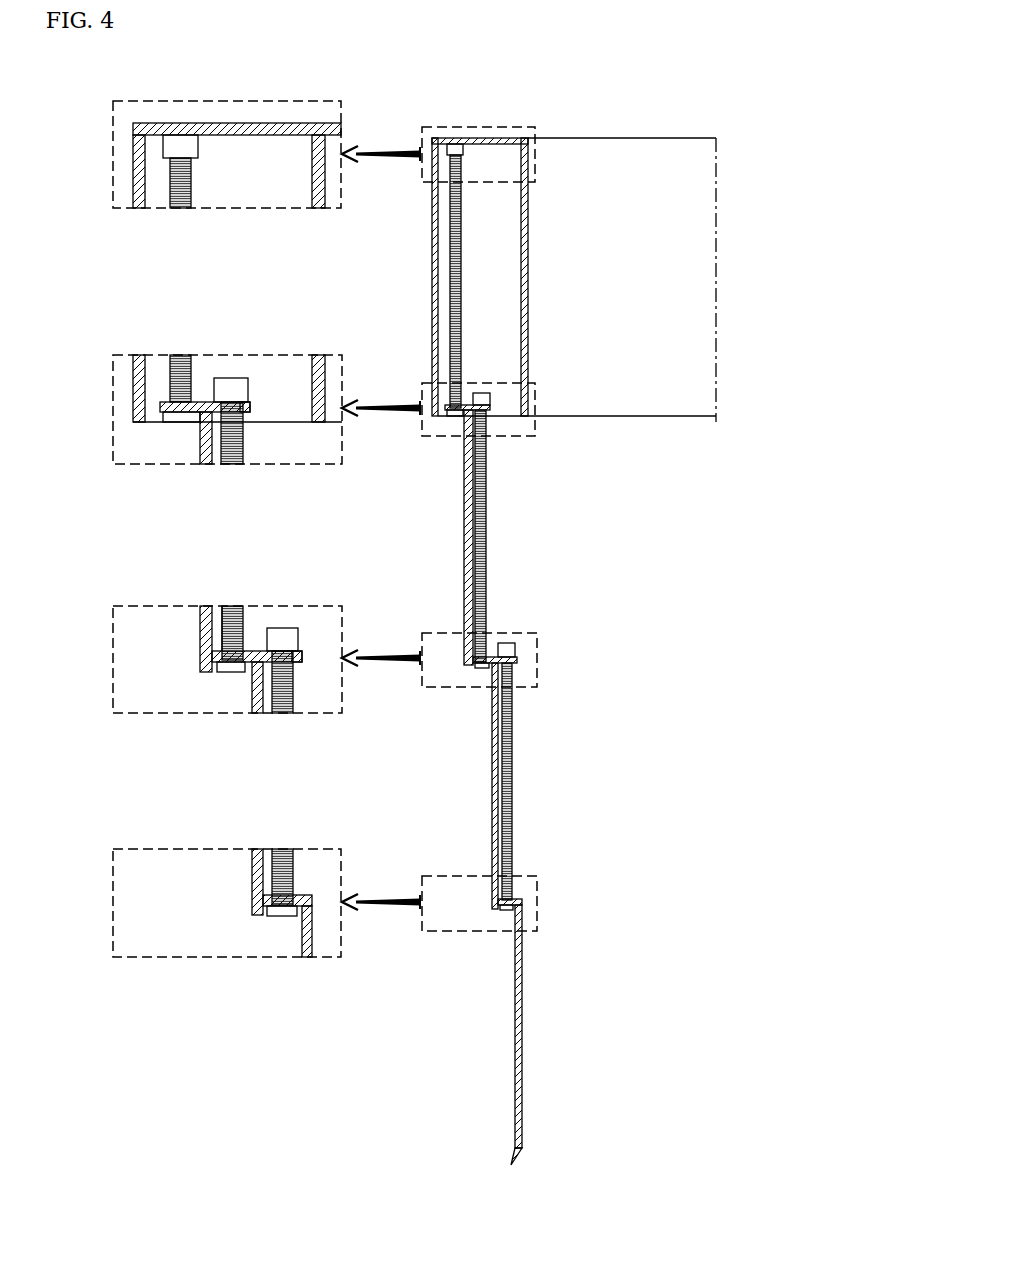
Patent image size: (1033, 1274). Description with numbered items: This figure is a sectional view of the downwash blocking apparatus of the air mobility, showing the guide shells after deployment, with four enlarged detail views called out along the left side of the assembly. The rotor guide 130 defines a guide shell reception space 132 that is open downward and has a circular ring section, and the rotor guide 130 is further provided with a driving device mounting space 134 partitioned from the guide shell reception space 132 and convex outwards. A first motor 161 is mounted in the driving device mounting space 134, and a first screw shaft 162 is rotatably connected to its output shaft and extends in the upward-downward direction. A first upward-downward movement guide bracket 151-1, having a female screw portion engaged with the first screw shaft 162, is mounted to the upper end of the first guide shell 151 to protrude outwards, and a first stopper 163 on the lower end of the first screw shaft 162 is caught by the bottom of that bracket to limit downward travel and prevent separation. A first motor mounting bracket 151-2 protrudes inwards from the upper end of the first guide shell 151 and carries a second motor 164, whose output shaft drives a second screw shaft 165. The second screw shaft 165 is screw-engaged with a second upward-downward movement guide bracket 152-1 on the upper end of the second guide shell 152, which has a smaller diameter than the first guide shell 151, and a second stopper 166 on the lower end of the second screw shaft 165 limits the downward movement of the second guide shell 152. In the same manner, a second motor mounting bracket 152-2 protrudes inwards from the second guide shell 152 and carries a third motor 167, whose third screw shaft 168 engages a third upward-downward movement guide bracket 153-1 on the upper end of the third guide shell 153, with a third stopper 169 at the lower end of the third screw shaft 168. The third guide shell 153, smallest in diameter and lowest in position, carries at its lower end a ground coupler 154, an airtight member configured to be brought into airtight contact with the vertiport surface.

The rotor guide 130 is at (600, 133).
The guide shell reception space 132 is at (496, 296).
The driving device mounting space 134 is at (441, 256).
The first guide shell 151 is at (206, 460).
The first upward-downward movement guide bracket 151-1 is at (158, 412).
The first motor mounting bracket 151-2 is at (250, 405).
The second guide shell 152 is at (257, 690).
The second upward-downward movement guide bracket 152-1 is at (207, 657).
The second motor mounting bracket 152-2 is at (300, 660).
The third guide shell 153 is at (308, 935).
The third upward-downward movement guide bracket 153-1 is at (306, 893).
The ground coupler 154 is at (512, 1155).
The first motor 161 is at (182, 143).
The first screw shaft 162 is at (170, 195).
The first stopper 163 is at (183, 418).
The second motor 164 is at (230, 388).
The second screw shaft 165 is at (238, 452).
The second stopper 166 is at (229, 668).
The third motor 167 is at (284, 638).
The third screw shaft 168 is at (284, 700).
The third stopper 169 is at (276, 915).